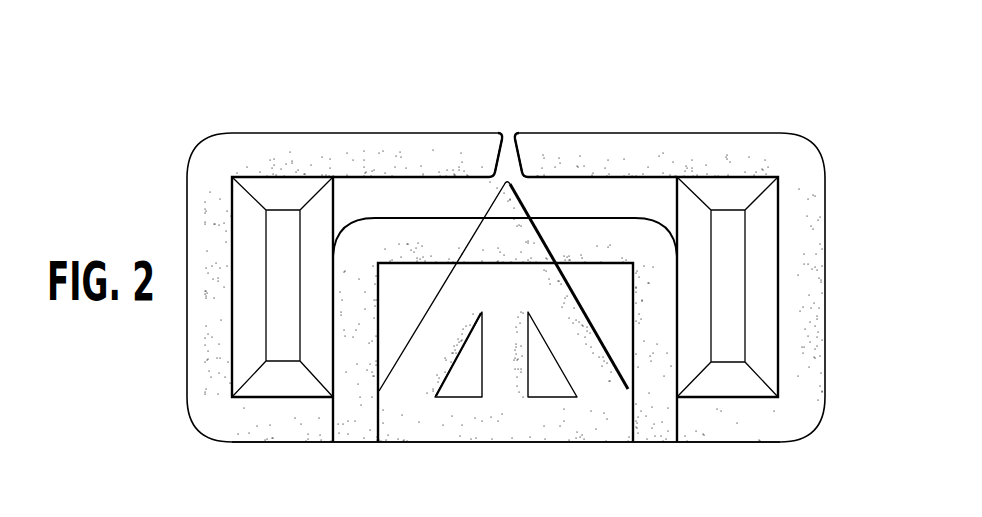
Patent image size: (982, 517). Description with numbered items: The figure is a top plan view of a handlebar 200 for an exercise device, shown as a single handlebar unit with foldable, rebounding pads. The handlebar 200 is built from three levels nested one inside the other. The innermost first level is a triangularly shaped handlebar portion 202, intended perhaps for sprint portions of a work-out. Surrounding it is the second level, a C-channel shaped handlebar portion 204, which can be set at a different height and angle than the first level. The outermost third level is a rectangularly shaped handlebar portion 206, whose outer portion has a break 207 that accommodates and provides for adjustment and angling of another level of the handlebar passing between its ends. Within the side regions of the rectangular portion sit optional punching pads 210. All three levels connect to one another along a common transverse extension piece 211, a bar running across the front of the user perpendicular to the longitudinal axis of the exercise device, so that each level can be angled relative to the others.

The handlebar 200 is at (171, 71).
The triangularly shaped handlebar portion 202 is at (518, 302).
The C-channel shaped handlebar portion 204 is at (518, 249).
The rectangularly shaped handlebar portion 206 is at (633, 164).
The break 207 is at (503, 152).
The punching pads 210 is at (245, 343).
The transverse extension piece 211 is at (353, 442).